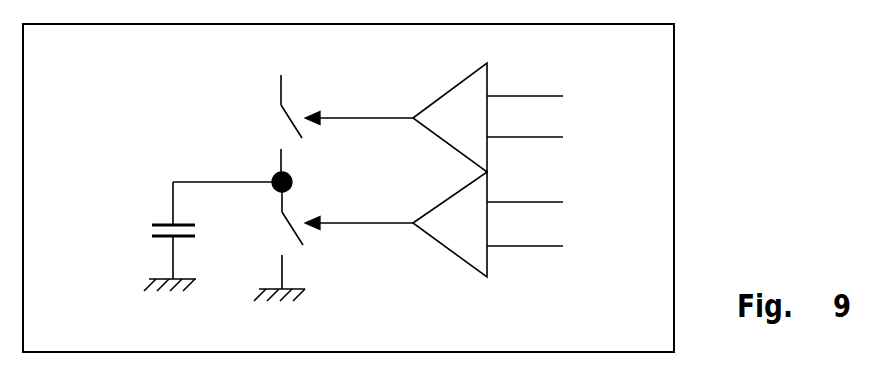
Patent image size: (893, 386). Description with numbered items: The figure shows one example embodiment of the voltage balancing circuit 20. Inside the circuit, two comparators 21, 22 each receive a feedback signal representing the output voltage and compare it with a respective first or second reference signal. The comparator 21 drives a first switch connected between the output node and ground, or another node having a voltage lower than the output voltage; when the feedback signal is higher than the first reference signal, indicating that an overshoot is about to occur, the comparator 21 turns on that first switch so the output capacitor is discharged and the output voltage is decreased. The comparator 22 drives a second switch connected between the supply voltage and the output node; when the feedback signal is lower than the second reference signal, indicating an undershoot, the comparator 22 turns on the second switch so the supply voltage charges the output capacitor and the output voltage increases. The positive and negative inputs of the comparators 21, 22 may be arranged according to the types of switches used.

The voltage balancing circuit 20 is at (71, 60).
The comparator 21 is at (447, 202).
The comparator 22 is at (448, 97).